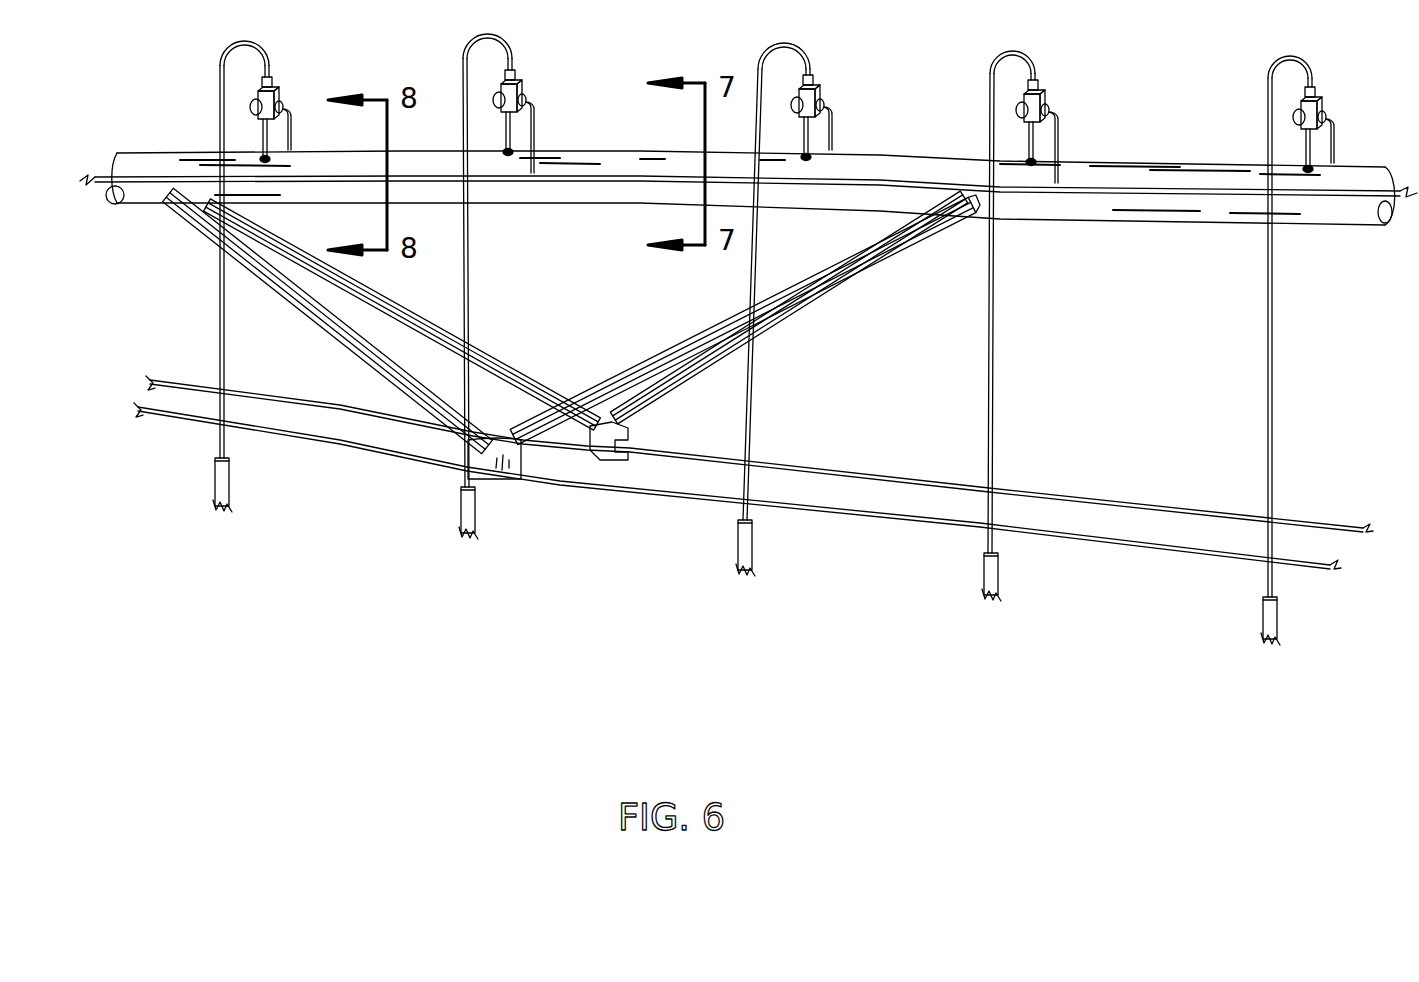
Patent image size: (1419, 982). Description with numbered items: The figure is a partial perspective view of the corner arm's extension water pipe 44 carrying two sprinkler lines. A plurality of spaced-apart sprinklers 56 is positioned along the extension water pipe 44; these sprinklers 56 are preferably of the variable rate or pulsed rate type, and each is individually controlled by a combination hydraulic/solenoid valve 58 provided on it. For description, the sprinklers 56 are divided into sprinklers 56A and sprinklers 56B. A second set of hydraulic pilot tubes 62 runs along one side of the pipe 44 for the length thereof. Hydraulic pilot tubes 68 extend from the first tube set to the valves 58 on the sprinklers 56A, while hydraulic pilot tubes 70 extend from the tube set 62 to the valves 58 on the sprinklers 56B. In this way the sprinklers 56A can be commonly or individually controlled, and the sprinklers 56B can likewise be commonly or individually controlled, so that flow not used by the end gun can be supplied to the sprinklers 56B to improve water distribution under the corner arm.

The extension water pipe 44 is at (115, 153).
The second set of hydraulic pilot tubes 62 is at (152, 177).
The hydraulic pilot tubes 70 is at (534, 120).
The hydraulic pilot tubes 68 is at (832, 133).
The combination hydraulic/solenoid valve 58 is at (1050, 92).
The sprinklers 56 is at (690, 554).
The sprinklers 56A is at (230, 458).
The sprinklers 56B is at (474, 481).